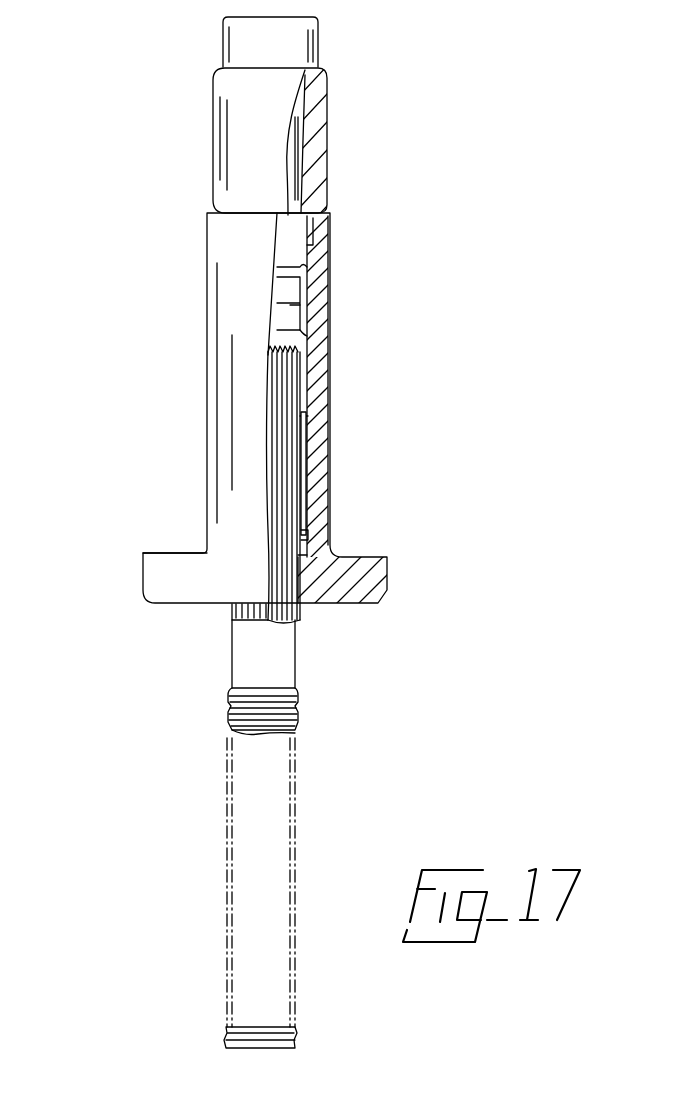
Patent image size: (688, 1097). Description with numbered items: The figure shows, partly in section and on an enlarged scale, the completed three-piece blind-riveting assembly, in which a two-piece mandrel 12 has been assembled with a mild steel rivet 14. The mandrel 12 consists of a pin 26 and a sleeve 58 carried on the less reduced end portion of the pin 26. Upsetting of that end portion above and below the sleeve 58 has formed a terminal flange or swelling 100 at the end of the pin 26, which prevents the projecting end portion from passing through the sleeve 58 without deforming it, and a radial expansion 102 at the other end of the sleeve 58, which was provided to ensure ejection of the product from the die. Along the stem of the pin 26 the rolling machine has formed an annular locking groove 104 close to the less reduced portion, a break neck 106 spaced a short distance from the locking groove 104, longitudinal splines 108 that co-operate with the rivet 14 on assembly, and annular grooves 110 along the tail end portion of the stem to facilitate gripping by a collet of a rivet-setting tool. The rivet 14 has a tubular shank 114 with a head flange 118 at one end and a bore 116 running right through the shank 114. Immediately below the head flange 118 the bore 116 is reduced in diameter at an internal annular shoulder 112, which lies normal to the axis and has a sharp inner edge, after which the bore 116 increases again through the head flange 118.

The terminal flange 100 is at (290, 33).
The sleeve 58 is at (245, 135).
The rivet 14 is at (172, 310).
The radial expansion 102 is at (298, 260).
The annular locking groove 104 is at (290, 290).
The break neck 106 is at (296, 302).
The tubular shank 114 is at (240, 443).
The bore 116 is at (300, 414).
The longitudinal splines 108 is at (292, 450).
The internal annular shoulder 112 is at (303, 532).
The head flange 118 is at (165, 575).
The pin 26 is at (258, 662).
The annular grooves 110 is at (300, 700).
The two-piece mandrel 12 is at (250, 778).